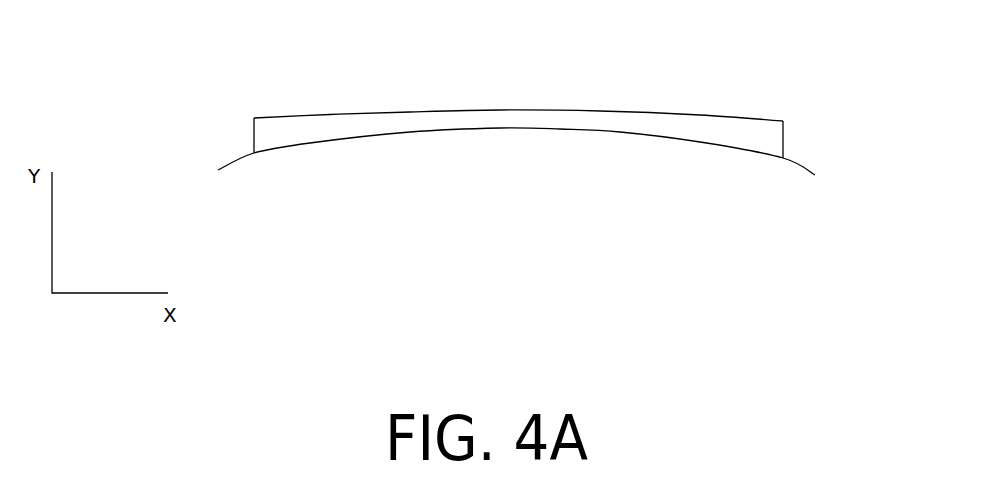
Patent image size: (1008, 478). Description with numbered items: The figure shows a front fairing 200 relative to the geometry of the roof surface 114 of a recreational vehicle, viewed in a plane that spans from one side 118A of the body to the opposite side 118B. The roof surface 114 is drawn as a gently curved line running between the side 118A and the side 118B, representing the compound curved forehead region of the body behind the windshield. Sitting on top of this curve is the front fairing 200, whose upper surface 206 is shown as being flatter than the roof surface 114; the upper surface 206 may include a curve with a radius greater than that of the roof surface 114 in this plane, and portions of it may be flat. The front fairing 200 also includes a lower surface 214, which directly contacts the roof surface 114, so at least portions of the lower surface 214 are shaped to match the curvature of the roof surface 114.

The roof surface 114 is at (208, 75).
The front fairing 200 is at (808, 135).
The upper surface 206 is at (333, 115).
The lower surface 214 is at (575, 128).
The side of the body 118A is at (197, 172).
The opposite side of the body 118B is at (837, 175).